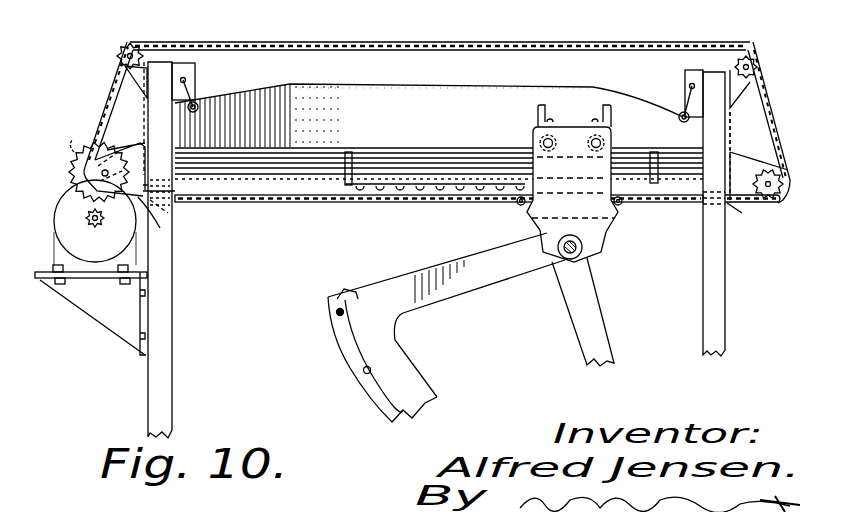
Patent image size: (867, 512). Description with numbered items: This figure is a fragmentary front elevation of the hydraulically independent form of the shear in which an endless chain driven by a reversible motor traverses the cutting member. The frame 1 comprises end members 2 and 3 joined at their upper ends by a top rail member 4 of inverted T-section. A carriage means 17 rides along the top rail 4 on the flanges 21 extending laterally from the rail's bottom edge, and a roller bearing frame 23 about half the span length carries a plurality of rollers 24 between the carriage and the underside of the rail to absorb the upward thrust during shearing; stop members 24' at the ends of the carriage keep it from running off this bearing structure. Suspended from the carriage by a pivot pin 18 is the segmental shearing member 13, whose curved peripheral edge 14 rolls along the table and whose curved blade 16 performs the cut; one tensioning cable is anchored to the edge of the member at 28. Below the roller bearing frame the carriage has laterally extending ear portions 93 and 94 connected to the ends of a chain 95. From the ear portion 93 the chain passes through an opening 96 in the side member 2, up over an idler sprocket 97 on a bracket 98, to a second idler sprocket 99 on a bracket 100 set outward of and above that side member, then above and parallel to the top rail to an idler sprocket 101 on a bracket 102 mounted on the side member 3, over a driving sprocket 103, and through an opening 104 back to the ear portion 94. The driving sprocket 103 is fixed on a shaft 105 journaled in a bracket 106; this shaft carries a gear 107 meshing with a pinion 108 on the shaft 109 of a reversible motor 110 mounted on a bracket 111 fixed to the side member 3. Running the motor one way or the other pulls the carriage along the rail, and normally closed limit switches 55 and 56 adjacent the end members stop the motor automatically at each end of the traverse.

The frame 1 is at (258, 88).
The end member 2 is at (725, 293).
The end member 3 is at (148, 397).
The top rail member 4 is at (420, 92).
The shearing member 13 is at (614, 322).
The curved peripheral edge 14 is at (345, 360).
The curved blade 16 is at (340, 333).
The carriage means 17 is at (532, 146).
The pivot pin 18 is at (562, 262).
The flanges 21 is at (432, 152).
The frame 23 is at (336, 200).
The rollers 24 is at (435, 215).
The stop members 24' is at (512, 153).
The cable anchor point 28 is at (345, 290).
The limit switch 55 is at (685, 77).
The limit switch 56 is at (195, 75).
The ear portion 93 is at (618, 206).
The ear portion 94 is at (520, 206).
The chain 95 is at (569, 43).
The opening 96 is at (718, 218).
The idler sprocket 97 is at (780, 206).
The bracket 98 is at (736, 215).
The idler sprocket 99 is at (758, 68).
The bracket 100 is at (743, 93).
The idler sprocket 101 is at (124, 47).
The bracket 102 is at (138, 88).
The driving sprocket 103 is at (116, 145).
The opening 104 is at (168, 213).
The shaft 105 is at (152, 184).
The bracket 106 is at (138, 200).
The gear 107 is at (74, 150).
The pinion 108 is at (88, 212).
The motor shaft 109 is at (118, 232).
The reversible motor 110 is at (127, 243).
The bracket 111 is at (100, 316).